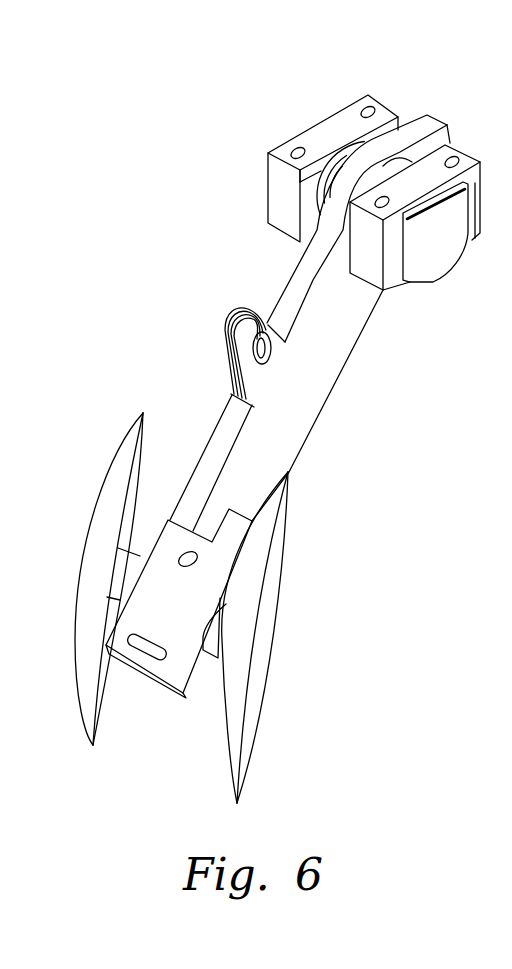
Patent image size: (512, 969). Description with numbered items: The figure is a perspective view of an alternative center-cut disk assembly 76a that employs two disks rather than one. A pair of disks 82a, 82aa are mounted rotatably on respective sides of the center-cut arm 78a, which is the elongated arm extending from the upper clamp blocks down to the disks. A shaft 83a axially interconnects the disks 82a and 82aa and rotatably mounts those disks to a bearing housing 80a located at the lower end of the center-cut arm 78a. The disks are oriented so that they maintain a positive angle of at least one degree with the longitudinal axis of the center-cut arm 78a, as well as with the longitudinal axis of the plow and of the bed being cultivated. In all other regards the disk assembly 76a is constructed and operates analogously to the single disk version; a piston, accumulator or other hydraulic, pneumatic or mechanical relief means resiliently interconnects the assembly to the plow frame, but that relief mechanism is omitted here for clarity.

The alternative center-cut disk assembly 76a is at (333, 482).
The center-cut arm 78a is at (333, 388).
The bearing housing 80a is at (148, 677).
The disk 82a is at (95, 563).
The disk 82aa is at (268, 643).
The shaft 83a is at (207, 667).